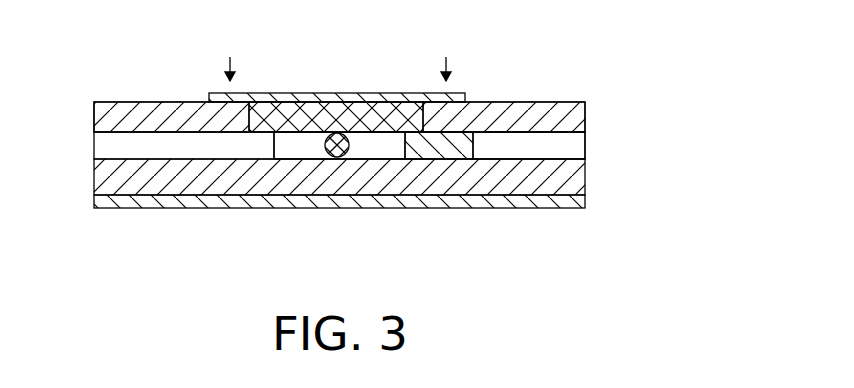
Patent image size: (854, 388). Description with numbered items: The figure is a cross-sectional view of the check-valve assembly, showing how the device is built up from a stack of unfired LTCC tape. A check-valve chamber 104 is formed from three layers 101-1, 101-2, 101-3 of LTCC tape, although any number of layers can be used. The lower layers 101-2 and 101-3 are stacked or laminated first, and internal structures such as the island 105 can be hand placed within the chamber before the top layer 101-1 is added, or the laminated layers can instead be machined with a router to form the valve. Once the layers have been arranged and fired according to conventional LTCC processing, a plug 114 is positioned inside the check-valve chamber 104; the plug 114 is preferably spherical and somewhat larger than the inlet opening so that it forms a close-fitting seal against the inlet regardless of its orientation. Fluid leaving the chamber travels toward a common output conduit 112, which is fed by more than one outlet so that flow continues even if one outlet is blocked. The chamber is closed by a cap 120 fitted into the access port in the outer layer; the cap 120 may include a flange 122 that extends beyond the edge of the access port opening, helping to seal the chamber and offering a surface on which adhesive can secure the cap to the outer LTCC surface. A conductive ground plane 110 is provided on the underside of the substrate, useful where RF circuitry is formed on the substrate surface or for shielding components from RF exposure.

The top LTCC tape layer 101-1 is at (587, 118).
The LTCC tape layer 101-2 is at (587, 150).
The LTCC tape layer 101-3 is at (587, 182).
The conductive ground plane 110 is at (140, 208).
The cap 120 is at (334, 92).
The flange 122 is at (213, 91).
The island 105 is at (452, 136).
The check-valve chamber 104 is at (301, 150).
The plug 114 is at (345, 153).
The output conduit 112 is at (530, 146).